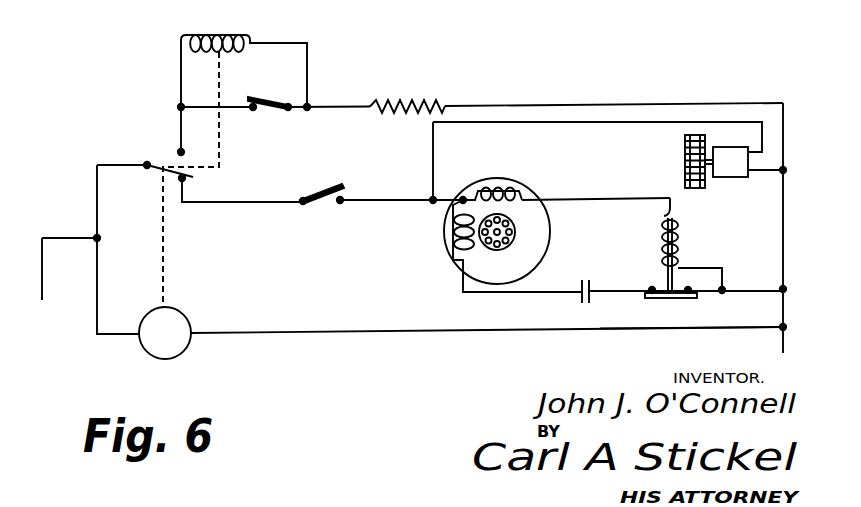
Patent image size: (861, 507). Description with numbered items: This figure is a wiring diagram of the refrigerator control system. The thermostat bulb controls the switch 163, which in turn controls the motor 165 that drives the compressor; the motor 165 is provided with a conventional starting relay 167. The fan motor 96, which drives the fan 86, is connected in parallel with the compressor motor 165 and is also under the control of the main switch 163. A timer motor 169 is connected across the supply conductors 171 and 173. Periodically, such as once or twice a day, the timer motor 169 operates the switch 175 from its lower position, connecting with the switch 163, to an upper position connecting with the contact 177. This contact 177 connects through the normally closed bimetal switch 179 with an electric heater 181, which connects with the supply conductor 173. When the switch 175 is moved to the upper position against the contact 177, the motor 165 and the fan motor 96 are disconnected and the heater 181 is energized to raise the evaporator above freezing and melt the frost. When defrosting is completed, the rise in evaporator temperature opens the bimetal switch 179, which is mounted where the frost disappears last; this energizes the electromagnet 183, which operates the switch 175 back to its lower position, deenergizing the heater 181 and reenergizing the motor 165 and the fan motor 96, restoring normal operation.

The fan 86 is at (685, 148).
The fan motor 96 is at (732, 170).
The switch 163 is at (323, 203).
The motor 165 is at (538, 229).
The starting relay 167 is at (680, 250).
The timer motor 169 is at (182, 312).
The supply conductor 171 is at (43, 283).
The supply conductor 173 is at (783, 335).
The switch 175 is at (178, 172).
The contact 177 is at (178, 152).
The bimetal switch 179 is at (272, 109).
The electric heater 181 is at (405, 97).
The electromagnet 183 is at (222, 34).